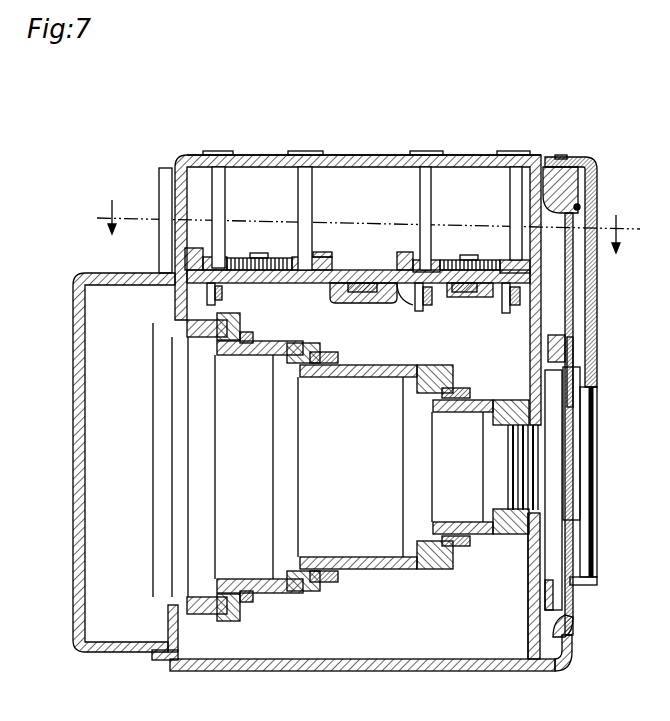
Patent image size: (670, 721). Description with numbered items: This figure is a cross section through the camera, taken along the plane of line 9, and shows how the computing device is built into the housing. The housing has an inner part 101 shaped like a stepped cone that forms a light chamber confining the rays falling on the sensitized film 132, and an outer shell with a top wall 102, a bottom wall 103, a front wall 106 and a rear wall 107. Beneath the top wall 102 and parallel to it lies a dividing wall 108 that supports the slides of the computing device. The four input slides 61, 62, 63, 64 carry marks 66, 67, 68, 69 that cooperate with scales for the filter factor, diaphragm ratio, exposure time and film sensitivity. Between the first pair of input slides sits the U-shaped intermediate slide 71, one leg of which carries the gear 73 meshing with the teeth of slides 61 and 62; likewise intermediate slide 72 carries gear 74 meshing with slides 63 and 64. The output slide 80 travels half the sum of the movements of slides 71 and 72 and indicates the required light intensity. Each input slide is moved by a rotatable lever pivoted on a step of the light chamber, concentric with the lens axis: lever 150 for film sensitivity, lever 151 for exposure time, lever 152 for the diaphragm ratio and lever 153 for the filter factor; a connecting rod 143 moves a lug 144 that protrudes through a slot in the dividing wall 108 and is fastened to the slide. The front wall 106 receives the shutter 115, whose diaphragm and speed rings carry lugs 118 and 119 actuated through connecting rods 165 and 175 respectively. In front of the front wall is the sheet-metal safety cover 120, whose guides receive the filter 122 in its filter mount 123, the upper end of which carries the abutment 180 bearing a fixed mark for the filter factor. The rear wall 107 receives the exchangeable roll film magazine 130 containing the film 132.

The section line 9- 9 is at (364, 226).
The slide 61 is at (505, 262).
The slide 62 is at (433, 260).
The slide 63 is at (293, 263).
The slide 64 is at (222, 263).
The mark 66 is at (512, 208).
The mark 67 is at (429, 189).
The mark 68 is at (309, 193).
The mark 69 is at (226, 184).
The intermediate slide 71 is at (473, 283).
The intermediate slide 72 is at (263, 277).
The gear 73 is at (450, 260).
The gear 74 is at (238, 257).
The slide 80 is at (365, 282).
The inner part 101 is at (370, 552).
The top wall 102 is at (360, 156).
The bottom wall 103 is at (335, 671).
The front wall 106 is at (527, 635).
The rear wall 107 is at (170, 188).
The dividing wall 108 is at (390, 306).
The shutter 115 is at (552, 437).
The lug 118 is at (565, 340).
The lug 119 is at (543, 573).
The safety cover 120 is at (573, 597).
The filter 122 is at (598, 388).
The filter mount 123 is at (597, 190).
The roll film magazine 130 is at (78, 492).
The sensitized film 132 is at (152, 490).
The connecting rod 143 is at (430, 310).
The lug 144 is at (418, 307).
The lever 150 is at (207, 317).
The lever 151 is at (285, 345).
The lever 152 is at (430, 365).
The lever 153 is at (515, 380).
The connecting rod 165 is at (557, 332).
The connecting rod 175 is at (565, 640).
The abutment 180 is at (565, 157).